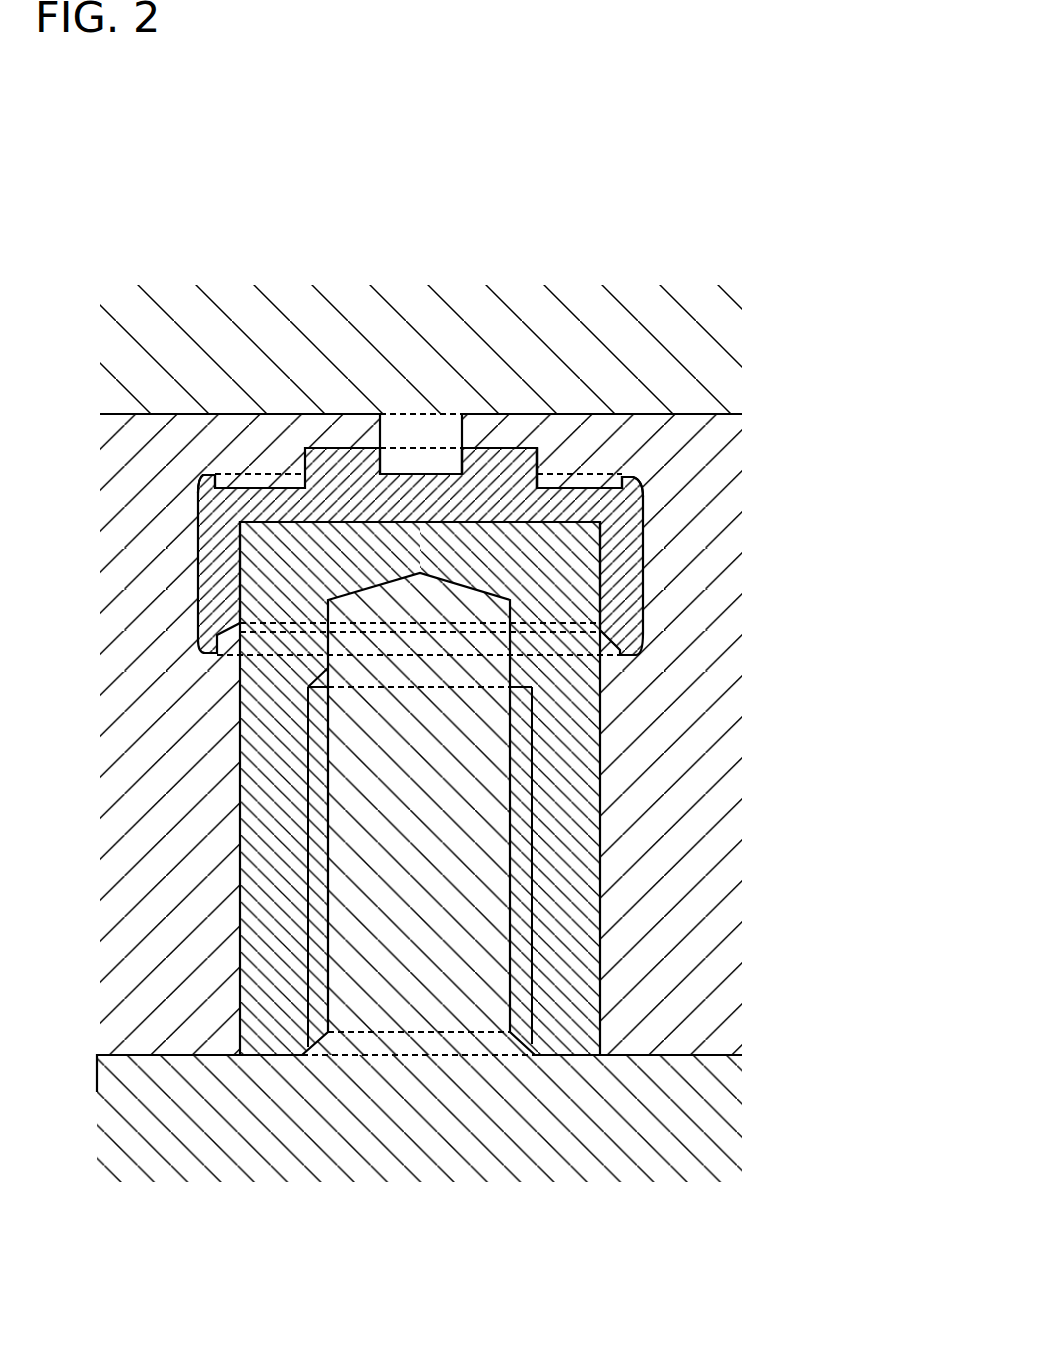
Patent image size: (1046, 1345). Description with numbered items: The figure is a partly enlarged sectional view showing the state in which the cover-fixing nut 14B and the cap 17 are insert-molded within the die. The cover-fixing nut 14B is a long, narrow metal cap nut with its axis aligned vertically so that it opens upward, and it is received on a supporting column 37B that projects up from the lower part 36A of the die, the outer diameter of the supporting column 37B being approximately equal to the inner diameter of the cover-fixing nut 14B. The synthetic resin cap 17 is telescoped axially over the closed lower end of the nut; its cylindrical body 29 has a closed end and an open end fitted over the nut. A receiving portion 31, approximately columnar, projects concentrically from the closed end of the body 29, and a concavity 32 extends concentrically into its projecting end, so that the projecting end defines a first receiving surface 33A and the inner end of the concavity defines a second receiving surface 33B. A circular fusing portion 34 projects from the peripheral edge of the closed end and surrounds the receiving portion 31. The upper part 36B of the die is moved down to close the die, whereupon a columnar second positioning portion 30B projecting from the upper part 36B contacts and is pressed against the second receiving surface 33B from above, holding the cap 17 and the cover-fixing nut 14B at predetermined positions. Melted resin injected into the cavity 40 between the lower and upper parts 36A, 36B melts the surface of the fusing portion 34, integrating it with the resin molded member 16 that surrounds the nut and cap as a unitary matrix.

The cover-fixing nut 14B is at (572, 795).
The resin molded member 16 is at (715, 919).
The cap 17 is at (270, 488).
The cylindrical body 29 is at (628, 565).
The second positioning portion 30B is at (425, 430).
The receiving portion 31 is at (540, 457).
The concavity 32 is at (452, 450).
The first receiving surface 33A is at (340, 447).
The second receiving surface 33B is at (403, 474).
The fusing portion 34 is at (209, 474).
The lower part 36A is at (710, 1122).
The upper part 36B is at (707, 358).
The supporting column 37B is at (430, 893).
The cavity 40 is at (695, 416).